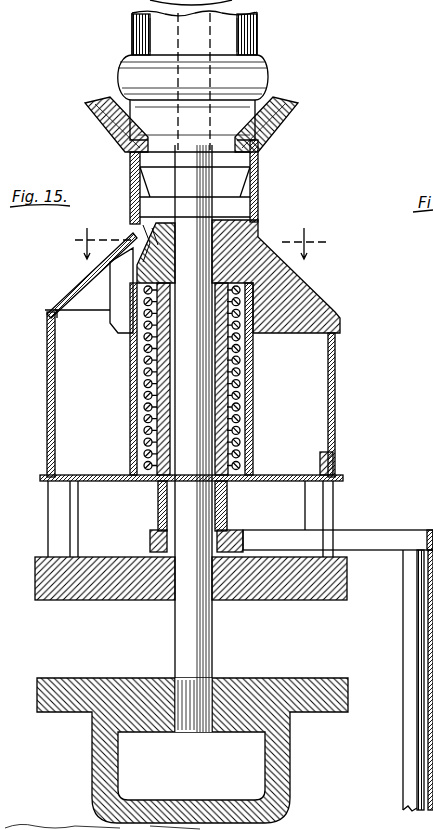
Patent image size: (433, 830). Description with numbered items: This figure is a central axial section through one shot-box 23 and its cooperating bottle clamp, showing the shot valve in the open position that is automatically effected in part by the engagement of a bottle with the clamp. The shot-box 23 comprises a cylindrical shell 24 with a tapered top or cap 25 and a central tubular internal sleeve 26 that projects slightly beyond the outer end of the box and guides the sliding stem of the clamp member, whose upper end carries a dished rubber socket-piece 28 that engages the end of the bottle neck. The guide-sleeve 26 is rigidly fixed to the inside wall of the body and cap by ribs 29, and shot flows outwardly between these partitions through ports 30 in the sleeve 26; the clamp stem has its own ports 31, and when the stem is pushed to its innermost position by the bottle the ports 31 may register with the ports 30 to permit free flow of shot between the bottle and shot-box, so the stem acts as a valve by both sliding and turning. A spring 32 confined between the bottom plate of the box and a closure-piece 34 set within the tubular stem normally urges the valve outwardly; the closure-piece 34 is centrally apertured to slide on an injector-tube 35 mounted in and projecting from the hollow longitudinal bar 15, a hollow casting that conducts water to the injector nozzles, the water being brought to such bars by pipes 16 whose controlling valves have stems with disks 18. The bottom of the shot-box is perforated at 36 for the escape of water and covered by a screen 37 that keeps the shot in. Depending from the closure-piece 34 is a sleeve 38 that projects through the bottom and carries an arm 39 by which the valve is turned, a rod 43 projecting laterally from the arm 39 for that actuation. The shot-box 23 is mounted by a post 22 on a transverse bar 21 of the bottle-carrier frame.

The hollow longitudinal bar 15 is at (288, 790).
The pipe 16 is at (198, 243).
The valve stem disk 18 is at (432, 395).
The transverse bar 21 is at (266, 601).
The post 22 is at (80, 505).
The shot-box 23 is at (359, 339).
The cylindrical shell 24 is at (335, 383).
The tapered top or cap 25 is at (88, 274).
The tubular internal sleeve 26 is at (253, 428).
The dished rubber socket-piece 28 is at (288, 104).
The rib 29 is at (117, 293).
The port 30 is at (140, 267).
The port 31 is at (148, 237).
The spring 32 is at (250, 375).
The closure-piece 34 is at (258, 220).
The injector-tube 35 is at (177, 628).
The perforation 36 is at (87, 480).
The screen 37 is at (334, 468).
The sleeve 38 is at (243, 405).
The arm 39 is at (376, 545).
The rod 43 is at (403, 633).